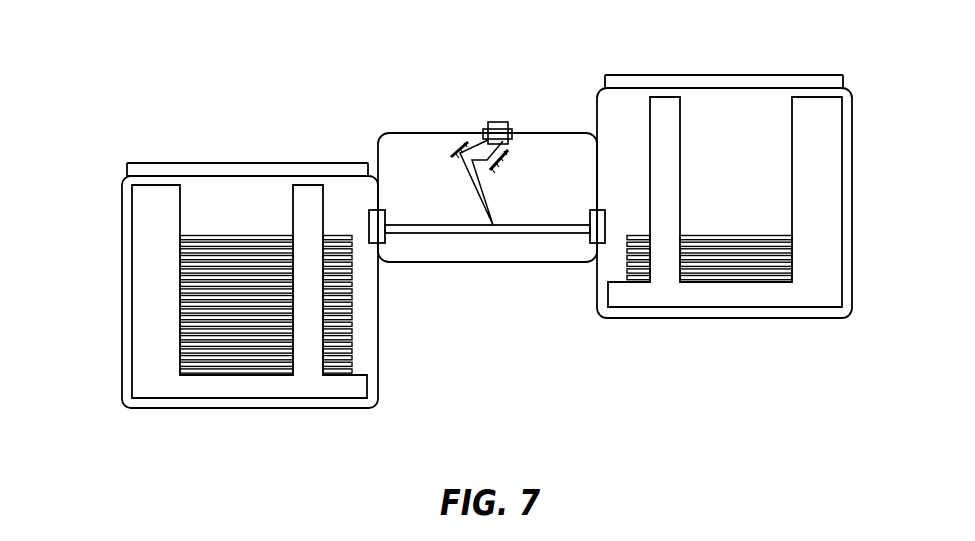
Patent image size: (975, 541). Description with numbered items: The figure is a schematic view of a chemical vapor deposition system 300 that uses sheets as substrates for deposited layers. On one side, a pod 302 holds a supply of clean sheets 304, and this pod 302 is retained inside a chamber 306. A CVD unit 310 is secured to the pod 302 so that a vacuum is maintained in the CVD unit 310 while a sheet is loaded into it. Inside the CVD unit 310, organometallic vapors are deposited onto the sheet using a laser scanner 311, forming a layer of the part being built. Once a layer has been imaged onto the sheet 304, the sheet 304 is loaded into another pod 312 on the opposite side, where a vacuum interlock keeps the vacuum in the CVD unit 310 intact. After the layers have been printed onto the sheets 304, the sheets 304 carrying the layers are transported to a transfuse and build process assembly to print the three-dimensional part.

The chemical vapor deposition system 300 is at (122, 66).
The pod 302 is at (253, 387).
The clean sheets 304 is at (248, 235).
The chamber 306 is at (122, 335).
The CVD unit 310 is at (538, 135).
The laser scanner 311 is at (493, 133).
The another pod 312 is at (852, 145).